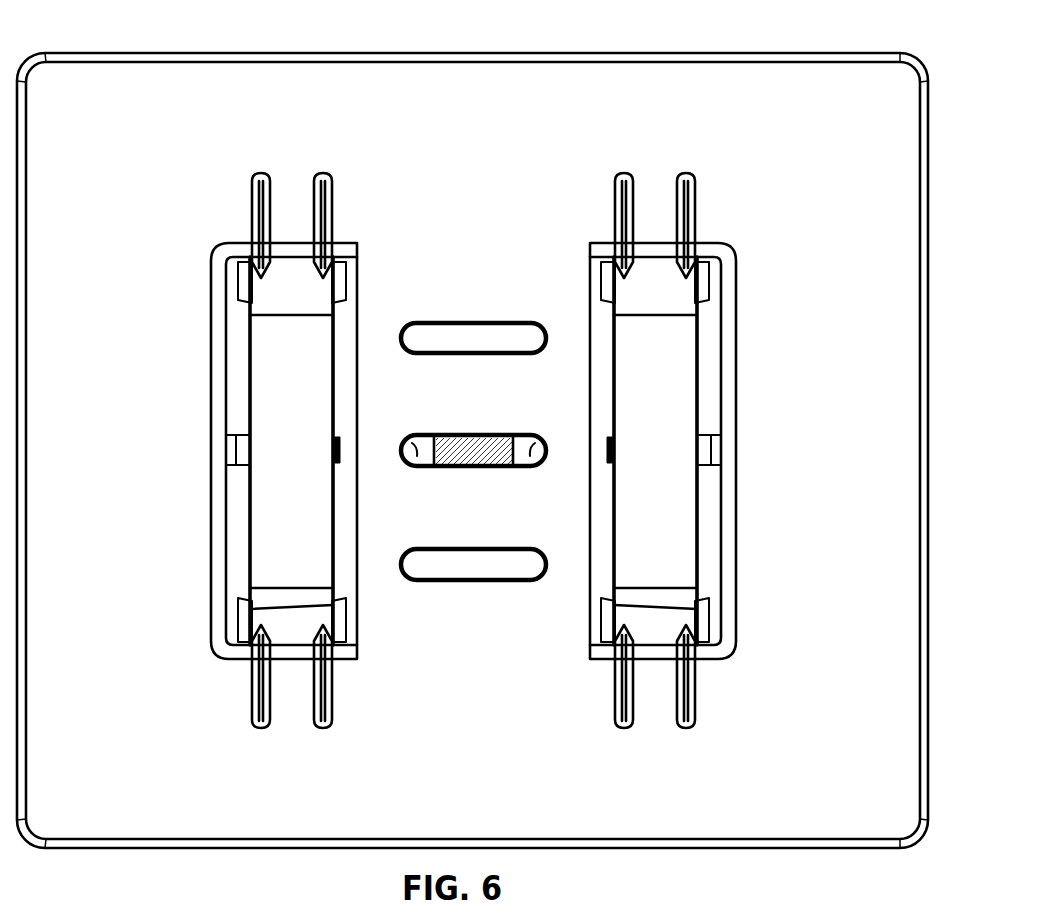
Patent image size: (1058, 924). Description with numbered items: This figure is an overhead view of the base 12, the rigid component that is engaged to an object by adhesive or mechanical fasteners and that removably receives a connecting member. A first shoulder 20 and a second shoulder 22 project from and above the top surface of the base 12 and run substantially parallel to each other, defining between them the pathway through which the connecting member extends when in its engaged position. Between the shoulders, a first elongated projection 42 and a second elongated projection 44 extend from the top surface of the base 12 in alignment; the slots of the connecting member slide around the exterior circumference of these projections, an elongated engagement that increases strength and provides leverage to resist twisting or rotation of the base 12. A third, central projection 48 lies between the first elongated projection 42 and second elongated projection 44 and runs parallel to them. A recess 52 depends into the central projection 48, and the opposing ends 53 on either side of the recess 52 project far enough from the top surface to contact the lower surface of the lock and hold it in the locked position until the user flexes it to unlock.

The base 12 is at (470, 96).
The second shoulder 22 is at (300, 303).
The first shoulder 20 is at (668, 280).
The second elongated projection 44 is at (458, 337).
The central projection 48 is at (517, 466).
The recess 52 is at (465, 445).
The opposing ends 53 is at (417, 453).
The first elongated projection 42 is at (462, 567).